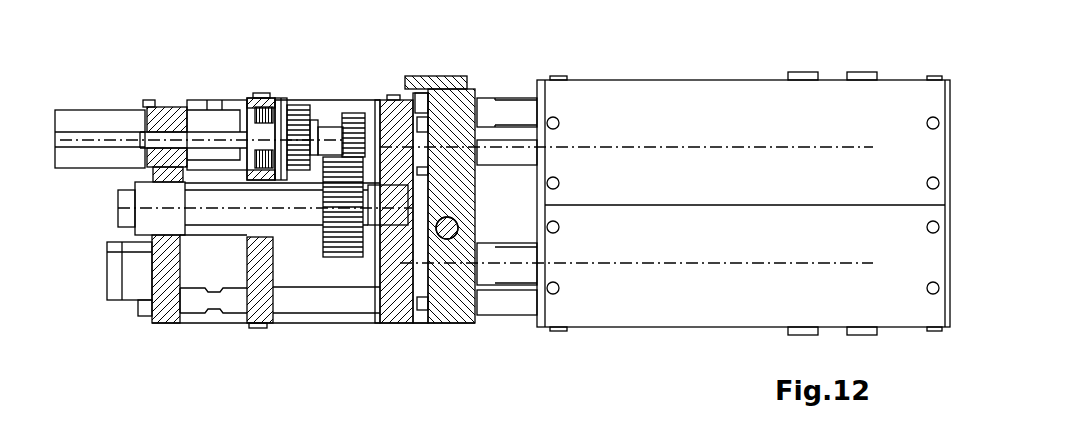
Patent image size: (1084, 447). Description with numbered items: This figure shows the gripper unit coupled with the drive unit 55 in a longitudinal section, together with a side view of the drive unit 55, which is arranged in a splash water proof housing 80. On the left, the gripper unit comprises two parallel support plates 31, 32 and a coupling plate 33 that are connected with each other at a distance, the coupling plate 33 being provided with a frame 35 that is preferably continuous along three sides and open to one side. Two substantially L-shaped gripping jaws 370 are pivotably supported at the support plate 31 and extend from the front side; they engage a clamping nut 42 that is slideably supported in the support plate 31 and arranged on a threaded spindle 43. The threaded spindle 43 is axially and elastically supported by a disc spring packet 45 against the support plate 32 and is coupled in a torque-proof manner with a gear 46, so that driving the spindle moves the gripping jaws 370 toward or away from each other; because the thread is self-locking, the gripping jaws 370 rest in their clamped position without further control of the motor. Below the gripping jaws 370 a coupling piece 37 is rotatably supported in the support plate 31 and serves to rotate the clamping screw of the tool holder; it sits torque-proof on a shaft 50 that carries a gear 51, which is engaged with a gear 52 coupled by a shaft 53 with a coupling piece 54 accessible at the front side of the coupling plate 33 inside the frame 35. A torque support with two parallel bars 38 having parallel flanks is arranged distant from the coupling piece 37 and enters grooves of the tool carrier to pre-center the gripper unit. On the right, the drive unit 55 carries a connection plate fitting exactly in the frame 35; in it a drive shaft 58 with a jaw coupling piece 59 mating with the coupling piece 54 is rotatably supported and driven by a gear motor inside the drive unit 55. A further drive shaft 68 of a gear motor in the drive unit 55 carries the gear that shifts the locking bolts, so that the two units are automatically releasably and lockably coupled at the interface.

The gripping jaws 370 is at (73, 127).
The clamping nut 42 is at (167, 107).
The threaded spindle 43 is at (203, 137).
The spring packet 45 is at (277, 107).
The gear 46 is at (297, 170).
The gear 52 is at (353, 113).
The shaft 53 is at (377, 127).
The coupling piece 54 is at (421, 110).
The frame 35 is at (447, 77).
The drive shaft 58 is at (512, 140).
The drive unit 55 is at (892, 78).
The splash water proof housing 80 is at (913, 150).
The jaw coupling piece 59 is at (428, 170).
The coupling piece 37 is at (143, 197).
The shaft 50 is at (205, 214).
The bars 38 is at (108, 298).
The support plate 31 is at (165, 312).
The support plate 32 is at (260, 308).
The gear 51 is at (345, 257).
The coupling plate 33 is at (400, 303).
The drive shaft 68 is at (512, 275).